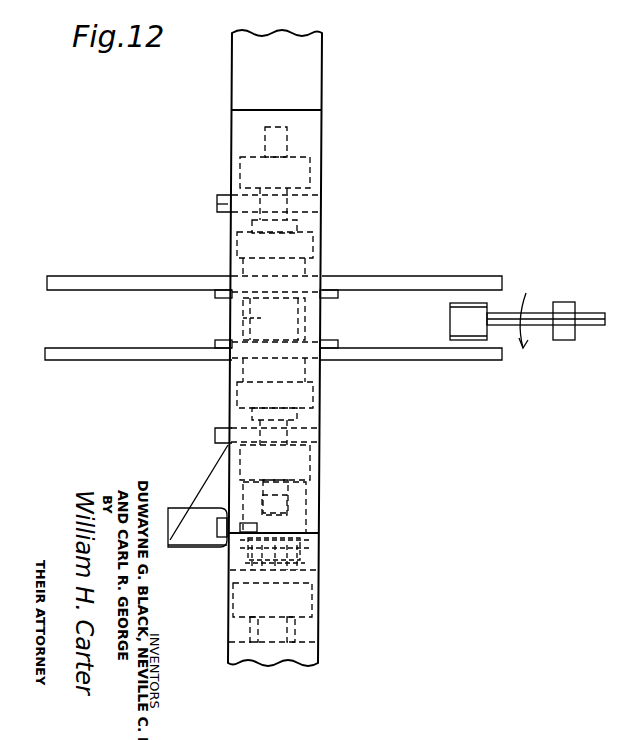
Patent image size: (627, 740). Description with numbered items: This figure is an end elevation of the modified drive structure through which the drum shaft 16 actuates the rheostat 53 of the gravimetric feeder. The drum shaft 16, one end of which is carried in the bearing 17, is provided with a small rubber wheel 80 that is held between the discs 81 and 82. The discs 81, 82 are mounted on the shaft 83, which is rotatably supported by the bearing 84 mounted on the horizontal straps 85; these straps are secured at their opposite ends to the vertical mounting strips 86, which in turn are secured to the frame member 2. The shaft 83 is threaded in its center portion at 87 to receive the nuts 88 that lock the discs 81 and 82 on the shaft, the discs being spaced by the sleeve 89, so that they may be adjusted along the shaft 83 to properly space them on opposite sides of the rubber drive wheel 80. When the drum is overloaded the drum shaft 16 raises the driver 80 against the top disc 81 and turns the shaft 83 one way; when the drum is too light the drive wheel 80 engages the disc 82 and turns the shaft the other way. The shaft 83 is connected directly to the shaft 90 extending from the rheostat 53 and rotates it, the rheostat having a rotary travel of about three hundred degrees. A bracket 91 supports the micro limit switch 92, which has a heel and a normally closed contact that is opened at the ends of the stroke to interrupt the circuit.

The frame member 2 is at (248, 72).
The drum shaft 16 is at (540, 320).
The bearing 17 is at (566, 330).
The rheostat 53 is at (310, 604).
The rubber wheel 80 is at (468, 320).
The disc 81 is at (172, 250).
The disc 82 is at (110, 357).
The shaft 83 is at (289, 133).
The bearing 84 is at (310, 168).
The horizontal strap 85 is at (217, 200).
The vertical mounting strip 86 is at (240, 140).
The threaded center portion 87 is at (300, 318).
The nut 88 is at (313, 237).
The sleeve 89 is at (242, 320).
The rheostat shaft 90 is at (300, 557).
The bracket 91 is at (209, 474).
The micro limit switch 92 is at (188, 533).